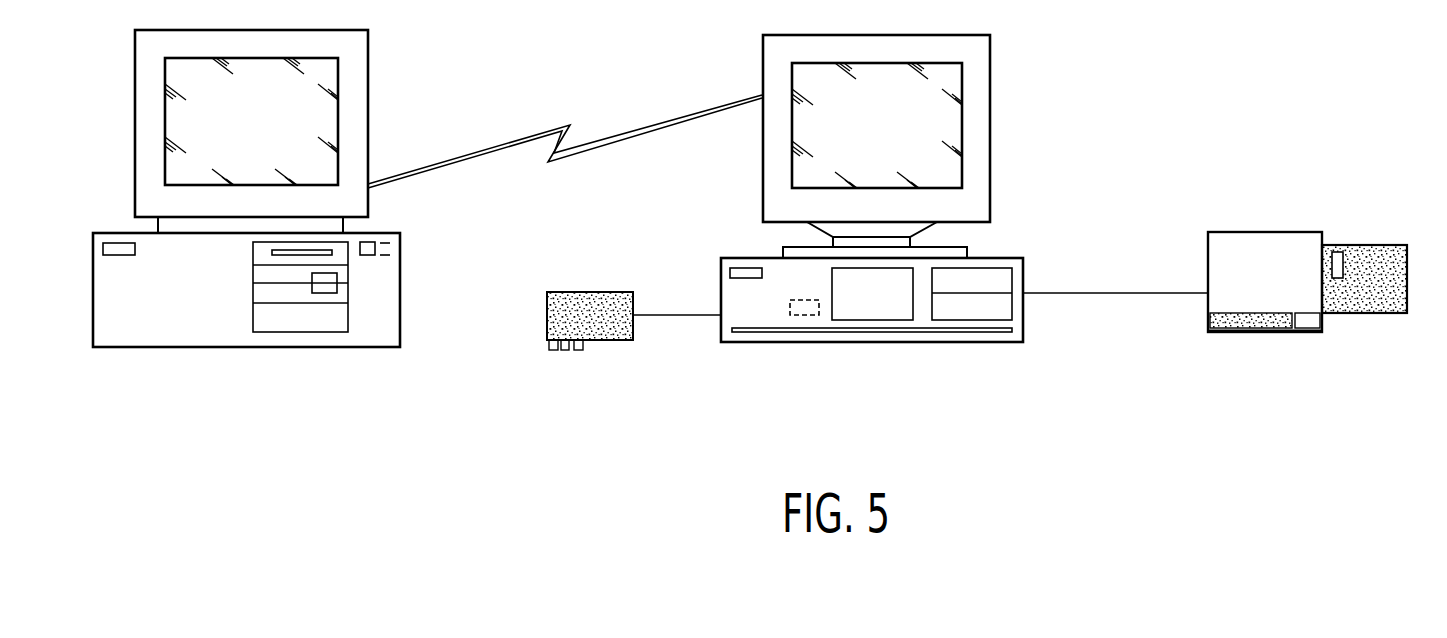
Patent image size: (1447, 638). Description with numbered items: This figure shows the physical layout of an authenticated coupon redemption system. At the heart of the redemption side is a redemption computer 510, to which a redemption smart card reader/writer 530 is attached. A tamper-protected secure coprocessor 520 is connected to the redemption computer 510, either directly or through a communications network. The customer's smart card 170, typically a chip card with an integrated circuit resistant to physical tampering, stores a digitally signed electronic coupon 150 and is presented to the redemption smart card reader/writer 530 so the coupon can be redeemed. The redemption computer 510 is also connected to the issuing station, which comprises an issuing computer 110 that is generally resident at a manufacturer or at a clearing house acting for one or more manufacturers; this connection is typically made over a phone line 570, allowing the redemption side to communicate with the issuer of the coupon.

The issuing computer 110 is at (247, 352).
The phone line 570 is at (613, 124).
The redemption computer 510 is at (870, 345).
The tamper-protected secure coprocessor 520 is at (592, 337).
The redemption smart card reader/writer 530 is at (1247, 325).
The customer's smart card 170 is at (1388, 317).
The digitally signed electronic coupon 150 is at (1338, 257).